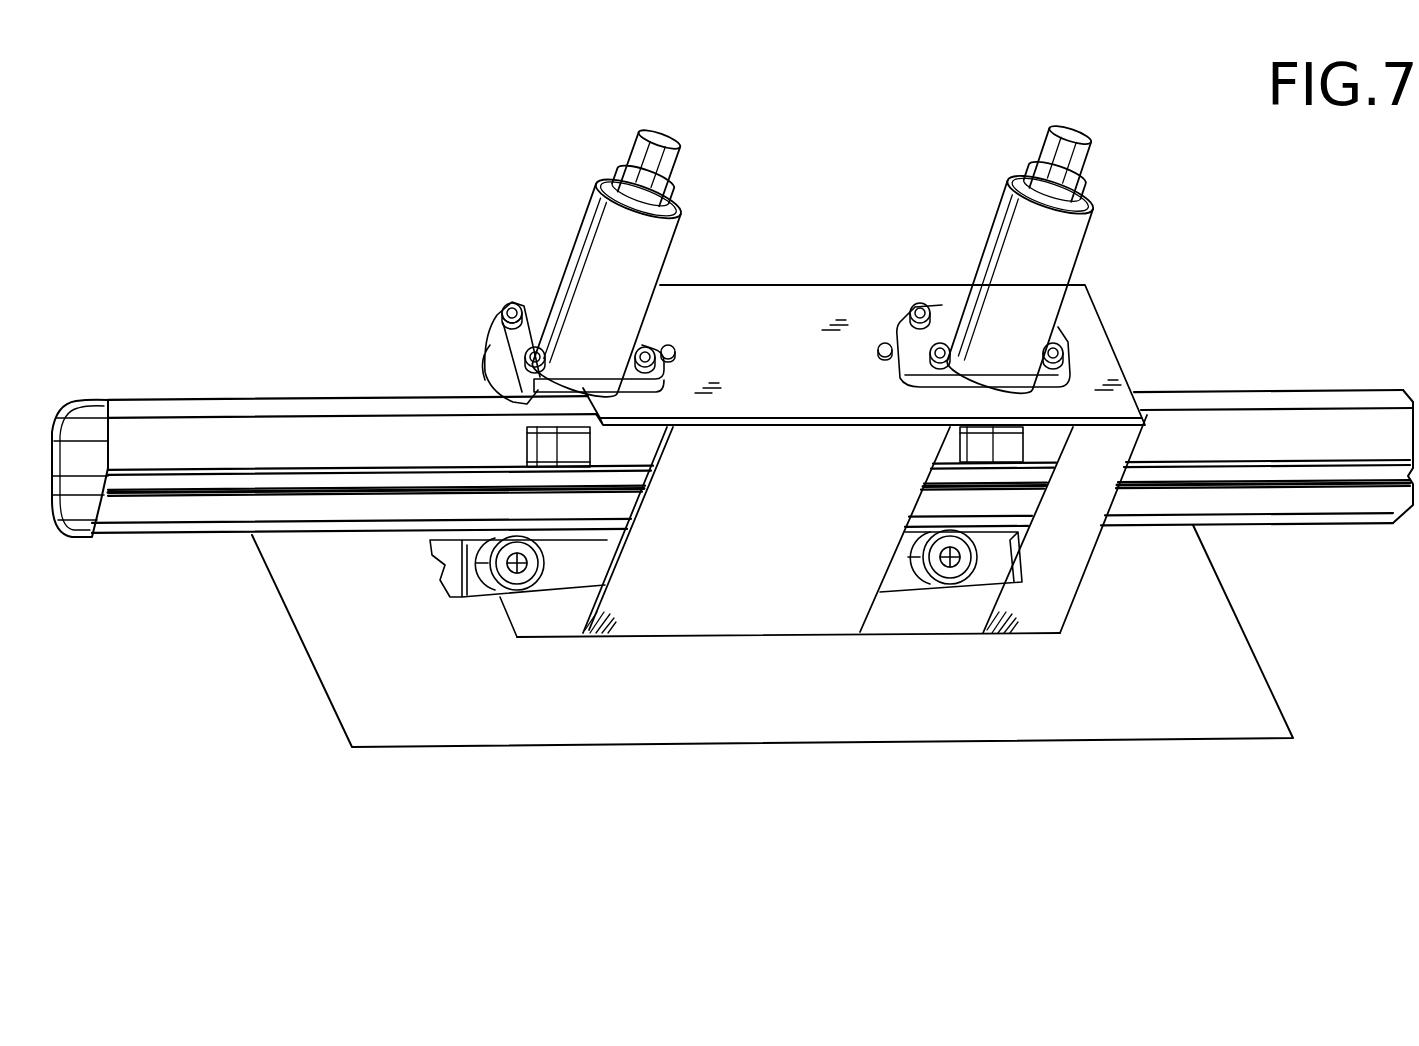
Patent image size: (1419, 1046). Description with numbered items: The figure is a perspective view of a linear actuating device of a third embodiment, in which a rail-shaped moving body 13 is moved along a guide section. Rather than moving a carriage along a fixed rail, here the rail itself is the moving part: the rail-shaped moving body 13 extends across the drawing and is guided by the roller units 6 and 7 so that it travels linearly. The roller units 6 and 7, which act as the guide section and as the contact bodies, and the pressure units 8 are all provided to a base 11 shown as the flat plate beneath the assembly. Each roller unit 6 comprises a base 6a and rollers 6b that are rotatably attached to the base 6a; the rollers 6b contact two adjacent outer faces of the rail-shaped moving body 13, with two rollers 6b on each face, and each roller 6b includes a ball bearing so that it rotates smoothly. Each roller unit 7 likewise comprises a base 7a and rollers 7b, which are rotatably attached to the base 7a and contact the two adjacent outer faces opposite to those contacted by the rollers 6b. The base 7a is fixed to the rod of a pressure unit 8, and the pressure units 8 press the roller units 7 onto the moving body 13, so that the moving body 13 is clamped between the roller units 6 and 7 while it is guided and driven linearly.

The rail-shaped moving body 13 is at (218, 447).
The roller unit 7 is at (776, 379).
The base 7a is at (492, 328).
The roller 7b is at (545, 447).
The pressure unit 8 is at (993, 257).
The roller unit 6 is at (788, 644).
The base 6a is at (568, 563).
The roller 6b is at (487, 583).
The base 11 is at (843, 727).